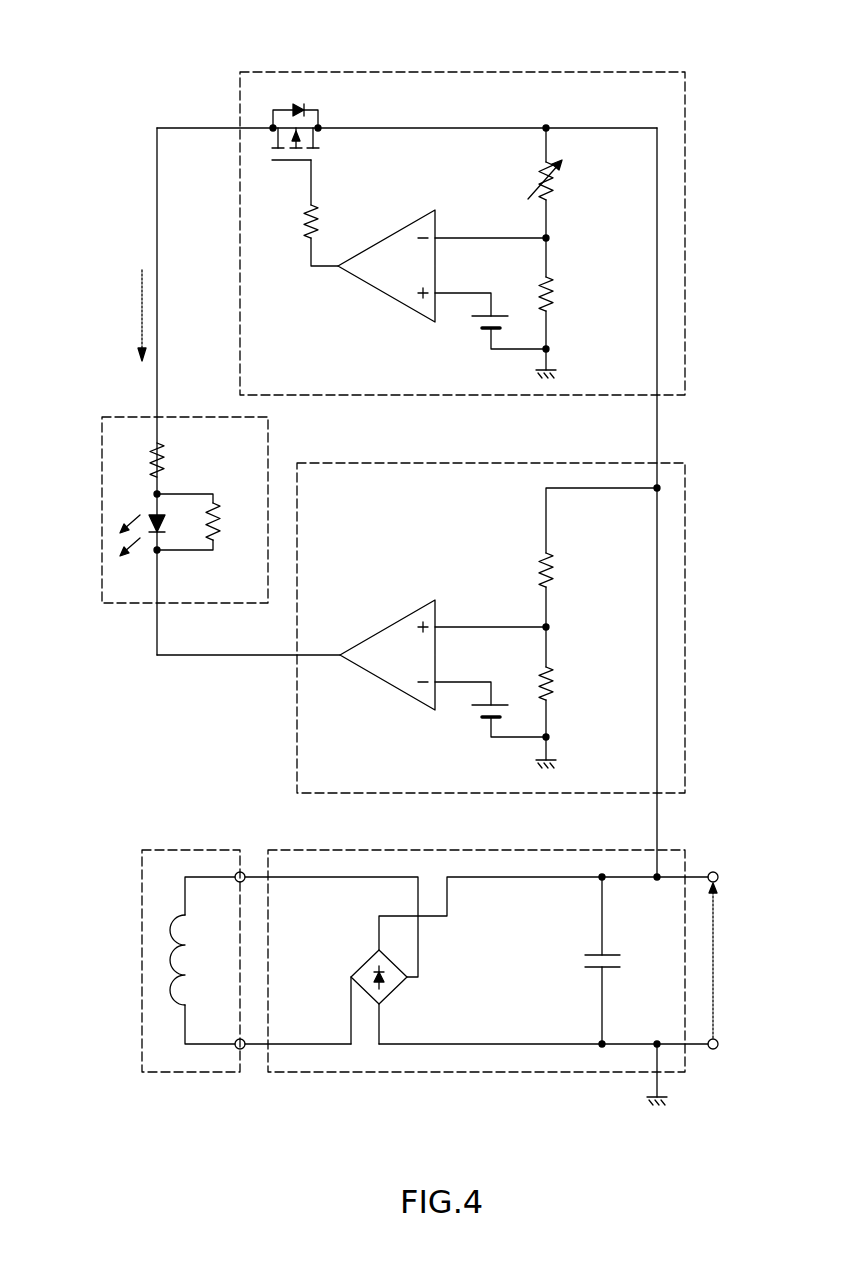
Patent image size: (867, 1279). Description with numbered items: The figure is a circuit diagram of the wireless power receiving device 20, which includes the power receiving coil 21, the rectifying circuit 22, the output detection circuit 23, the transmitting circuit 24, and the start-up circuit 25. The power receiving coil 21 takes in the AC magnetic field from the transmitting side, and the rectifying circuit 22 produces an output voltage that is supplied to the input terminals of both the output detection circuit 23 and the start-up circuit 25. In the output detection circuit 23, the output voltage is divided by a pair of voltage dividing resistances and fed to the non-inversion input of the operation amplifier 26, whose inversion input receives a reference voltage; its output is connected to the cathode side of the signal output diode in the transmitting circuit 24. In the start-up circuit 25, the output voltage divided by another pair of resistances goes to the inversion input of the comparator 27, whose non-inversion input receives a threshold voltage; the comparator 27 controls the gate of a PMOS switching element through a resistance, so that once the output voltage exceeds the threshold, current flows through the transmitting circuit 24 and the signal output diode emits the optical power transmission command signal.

The wireless power receiving device 20 is at (531, 29).
The power receiving coil 21 is at (191, 849).
The rectifying circuit 22 is at (492, 1072).
The output detection circuit 23 is at (685, 622).
The transmitting circuit 24 is at (100, 434).
The start-up circuit 25 is at (685, 232).
The operation amplifier 26 is at (388, 627).
The comparator 27 is at (388, 238).